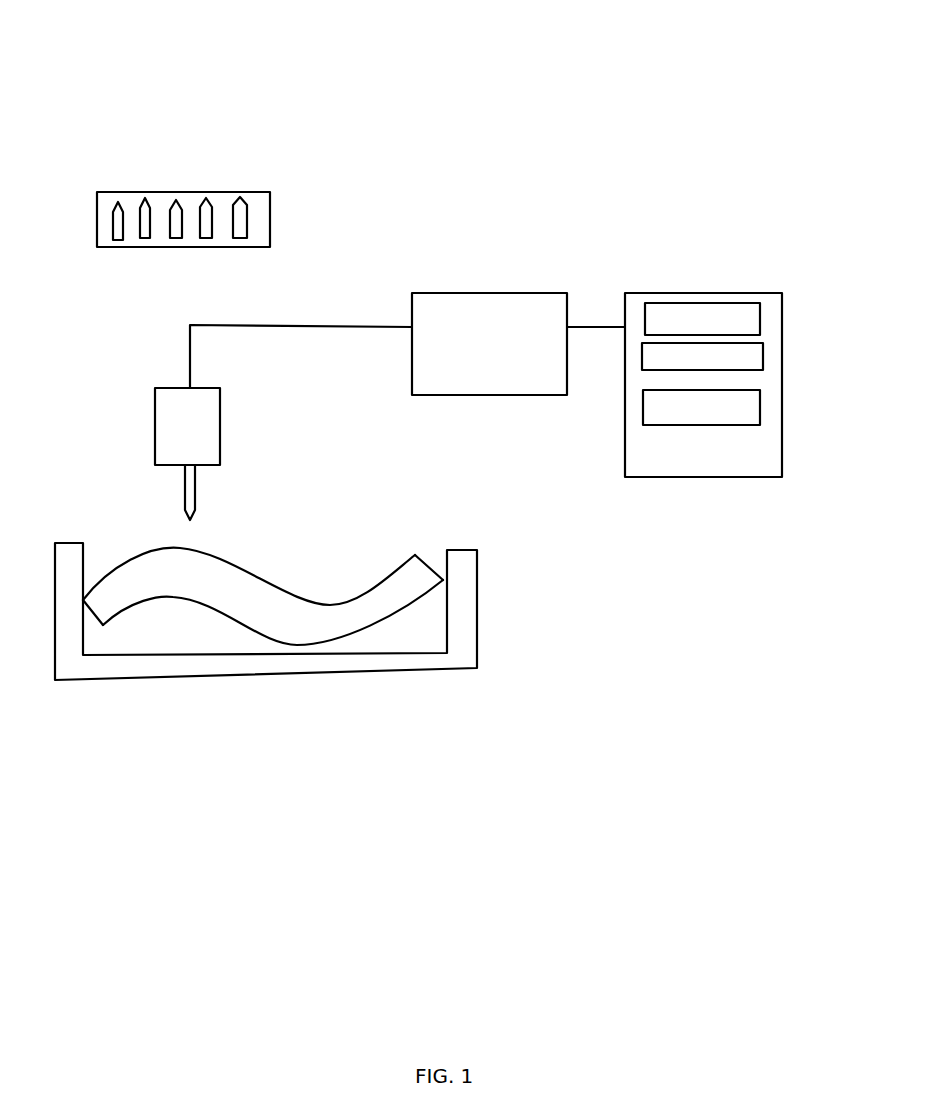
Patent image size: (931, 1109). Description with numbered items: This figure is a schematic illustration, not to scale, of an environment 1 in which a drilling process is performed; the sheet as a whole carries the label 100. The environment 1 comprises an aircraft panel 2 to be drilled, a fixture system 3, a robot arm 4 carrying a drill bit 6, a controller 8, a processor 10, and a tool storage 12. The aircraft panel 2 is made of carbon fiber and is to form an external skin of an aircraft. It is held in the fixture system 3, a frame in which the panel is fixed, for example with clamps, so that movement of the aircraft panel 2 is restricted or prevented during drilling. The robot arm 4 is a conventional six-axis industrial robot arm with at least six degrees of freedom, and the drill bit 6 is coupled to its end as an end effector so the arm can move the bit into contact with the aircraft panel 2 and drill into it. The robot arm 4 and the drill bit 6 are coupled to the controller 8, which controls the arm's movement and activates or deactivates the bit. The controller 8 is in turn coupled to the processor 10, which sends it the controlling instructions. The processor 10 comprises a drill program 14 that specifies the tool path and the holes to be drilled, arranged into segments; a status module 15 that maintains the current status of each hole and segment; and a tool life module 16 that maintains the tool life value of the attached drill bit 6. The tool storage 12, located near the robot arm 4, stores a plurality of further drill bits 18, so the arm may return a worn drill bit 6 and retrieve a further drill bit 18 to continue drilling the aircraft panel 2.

The system 100 is at (63, 27).
The environment 1 is at (737, 215).
The aircraft panel 2 is at (437, 558).
The fixture system 3 is at (477, 622).
The robot arm 4 is at (220, 432).
The drill bit 6 is at (196, 492).
The controller 8 is at (487, 293).
The processor 10 is at (735, 363).
The tool storage 12 is at (270, 215).
The drill program 14 is at (728, 302).
The status module 15 is at (763, 357).
The tool life module 16 is at (763, 407).
The further drill bits 18 is at (120, 248).